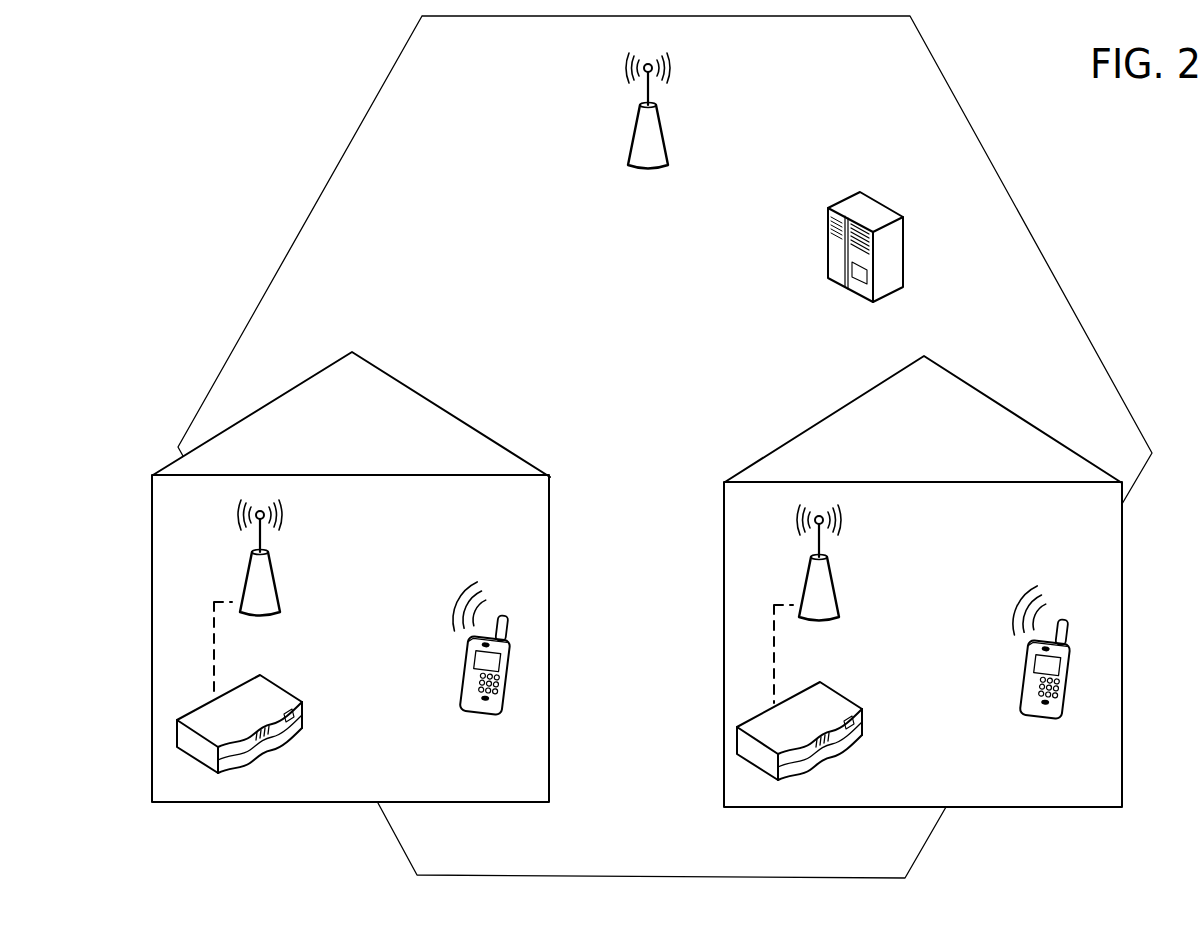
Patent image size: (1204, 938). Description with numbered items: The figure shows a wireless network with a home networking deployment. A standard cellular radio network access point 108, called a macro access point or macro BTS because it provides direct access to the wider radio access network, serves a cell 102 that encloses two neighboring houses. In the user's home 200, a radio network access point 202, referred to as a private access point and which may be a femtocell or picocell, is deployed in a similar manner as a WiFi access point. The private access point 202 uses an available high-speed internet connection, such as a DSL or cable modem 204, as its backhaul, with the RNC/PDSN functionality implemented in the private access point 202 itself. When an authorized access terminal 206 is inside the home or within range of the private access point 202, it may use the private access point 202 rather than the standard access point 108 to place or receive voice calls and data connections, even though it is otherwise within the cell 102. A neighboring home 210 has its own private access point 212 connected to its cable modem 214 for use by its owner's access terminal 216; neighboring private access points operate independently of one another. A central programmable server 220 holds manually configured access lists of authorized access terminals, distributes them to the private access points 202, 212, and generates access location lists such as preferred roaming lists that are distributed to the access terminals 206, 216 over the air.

The cell 102 is at (366, 94).
The access point 108 is at (628, 167).
The programmable server 220 is at (835, 289).
The home 200 is at (287, 803).
The private access point 202 is at (278, 613).
The cable modem 204 is at (243, 696).
The access terminal 206 is at (510, 703).
The neighboring home 210 is at (842, 808).
The private access point 212 is at (838, 618).
The cable modem 214 is at (802, 700).
The access terminal 216 is at (1070, 708).